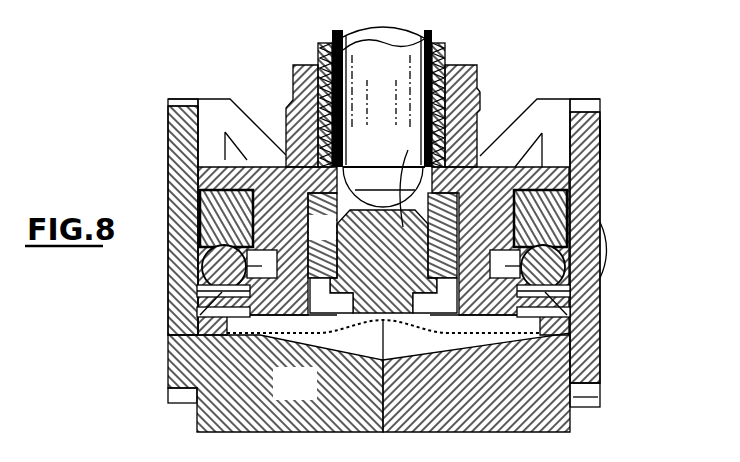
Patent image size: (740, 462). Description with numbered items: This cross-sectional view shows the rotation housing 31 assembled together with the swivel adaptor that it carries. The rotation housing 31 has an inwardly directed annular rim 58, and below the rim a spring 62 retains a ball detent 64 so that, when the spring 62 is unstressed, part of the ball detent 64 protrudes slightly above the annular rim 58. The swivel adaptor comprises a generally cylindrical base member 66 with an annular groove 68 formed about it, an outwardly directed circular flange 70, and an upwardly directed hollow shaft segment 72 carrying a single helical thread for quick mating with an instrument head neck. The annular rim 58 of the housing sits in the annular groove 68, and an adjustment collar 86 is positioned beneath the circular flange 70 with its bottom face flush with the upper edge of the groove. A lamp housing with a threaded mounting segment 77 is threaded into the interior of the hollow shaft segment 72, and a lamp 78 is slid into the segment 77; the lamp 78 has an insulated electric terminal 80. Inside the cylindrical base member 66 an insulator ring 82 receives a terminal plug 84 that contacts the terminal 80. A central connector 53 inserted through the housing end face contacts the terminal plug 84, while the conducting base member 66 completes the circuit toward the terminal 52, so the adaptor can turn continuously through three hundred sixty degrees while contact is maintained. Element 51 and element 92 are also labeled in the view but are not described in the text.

The rotation housing 31 is at (311, 395).
The housing cover 51 is at (168, 128).
The terminal 52 is at (601, 256).
The central connector 53 is at (430, 330).
The annular rim 58 is at (168, 272).
The spring 62 is at (168, 352).
The ball detent 64 is at (168, 290).
The cylindrical base member 66 is at (500, 231).
The annular groove 68 is at (168, 224).
The circular flange 70 is at (168, 166).
The hollow shaft segment 72 is at (478, 110).
The threaded mounting segment 77 is at (318, 62).
The lamp 78 is at (427, 44).
The insulated electric terminal 80 is at (383, 200).
The insulator ring 82 is at (382, 235).
The terminal plug 84 is at (407, 177).
The adjustment collar 86 is at (601, 138).
The right bushing 92 is at (601, 192).